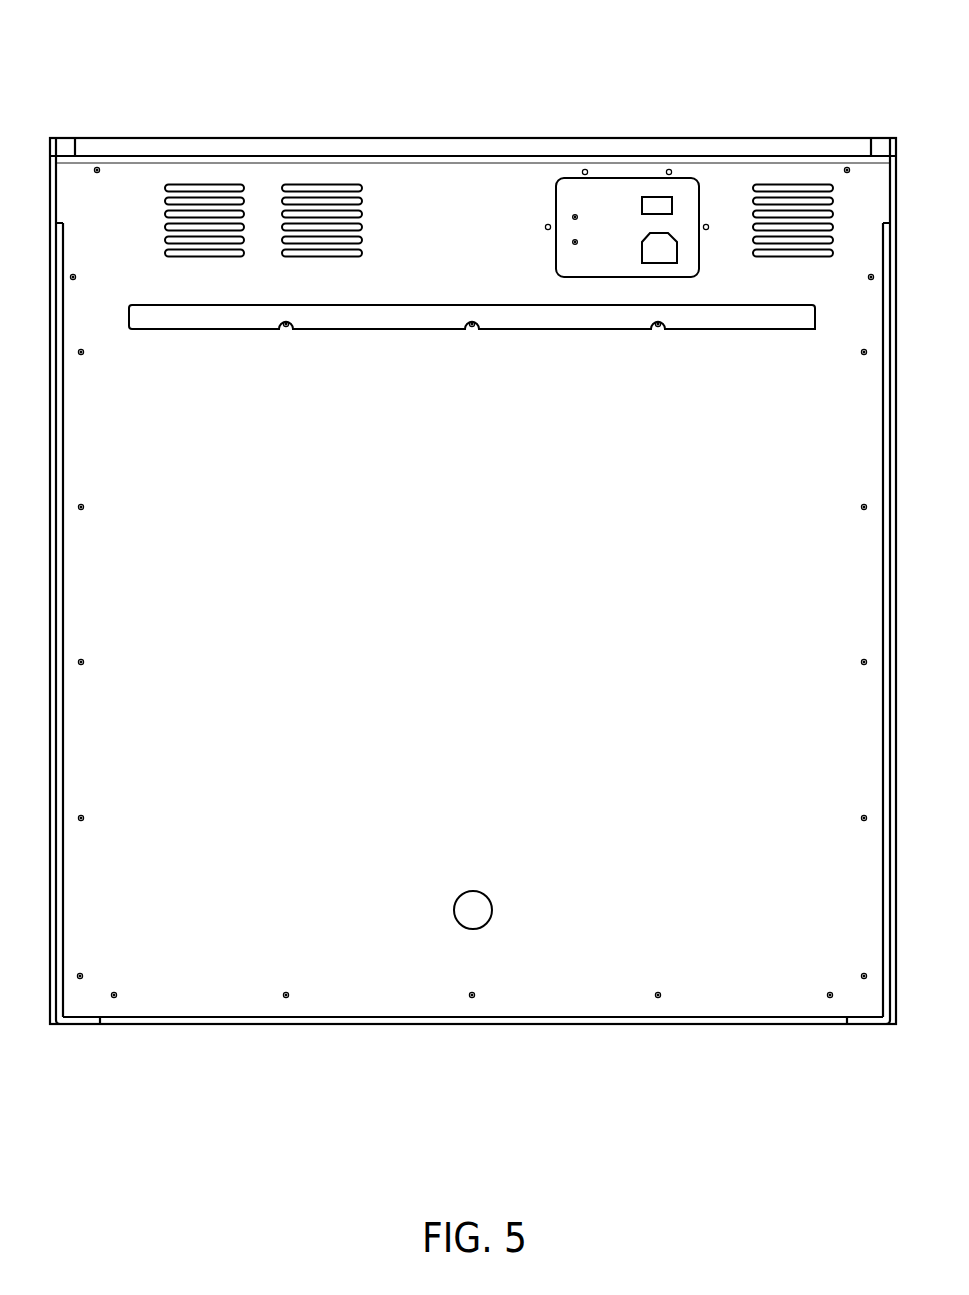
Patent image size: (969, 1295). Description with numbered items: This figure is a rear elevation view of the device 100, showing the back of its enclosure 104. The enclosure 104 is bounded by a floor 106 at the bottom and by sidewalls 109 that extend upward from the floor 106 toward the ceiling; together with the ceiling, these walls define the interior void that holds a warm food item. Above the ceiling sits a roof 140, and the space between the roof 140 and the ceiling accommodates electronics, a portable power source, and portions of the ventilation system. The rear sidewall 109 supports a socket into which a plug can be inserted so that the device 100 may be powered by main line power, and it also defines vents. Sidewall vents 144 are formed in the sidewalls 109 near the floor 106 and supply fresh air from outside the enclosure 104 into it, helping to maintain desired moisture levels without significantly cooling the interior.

The device 100 is at (322, 76).
The enclosure 104 is at (480, 433).
The floor 106 is at (330, 1023).
The sidewalls 109 is at (220, 562).
The roof 140 is at (537, 138).
The sidewall vents 144 is at (484, 895).